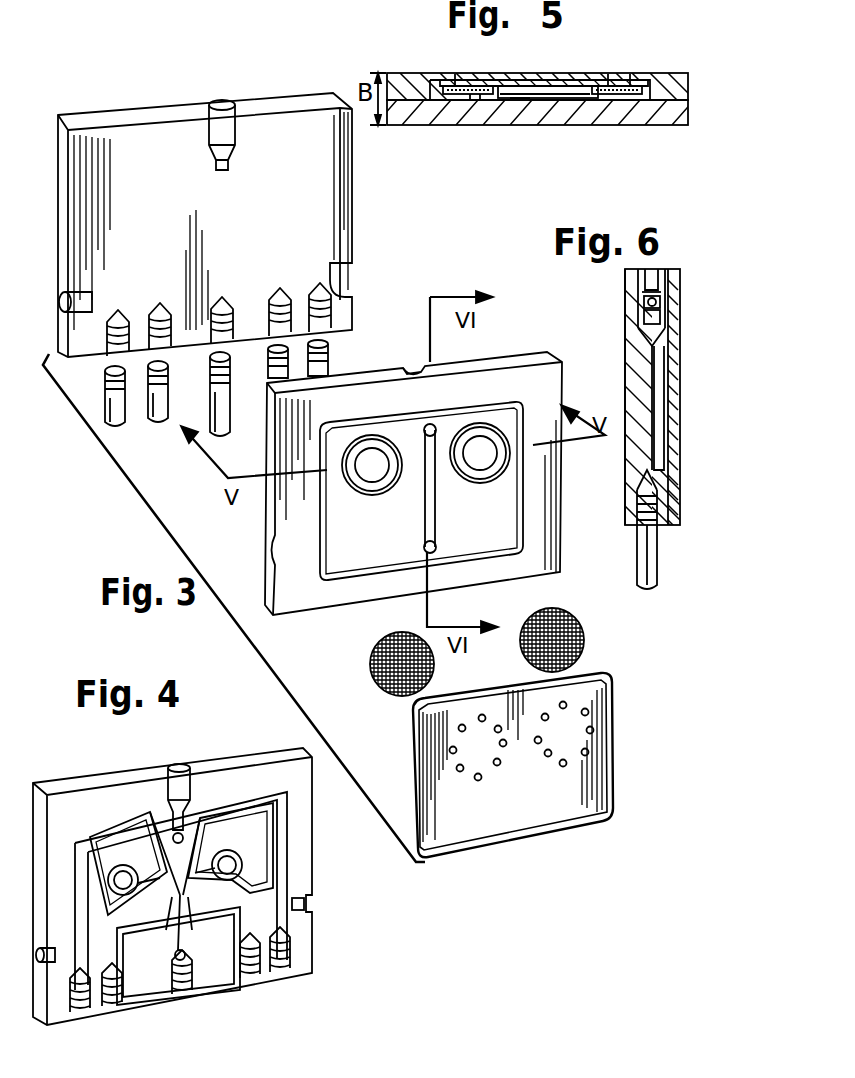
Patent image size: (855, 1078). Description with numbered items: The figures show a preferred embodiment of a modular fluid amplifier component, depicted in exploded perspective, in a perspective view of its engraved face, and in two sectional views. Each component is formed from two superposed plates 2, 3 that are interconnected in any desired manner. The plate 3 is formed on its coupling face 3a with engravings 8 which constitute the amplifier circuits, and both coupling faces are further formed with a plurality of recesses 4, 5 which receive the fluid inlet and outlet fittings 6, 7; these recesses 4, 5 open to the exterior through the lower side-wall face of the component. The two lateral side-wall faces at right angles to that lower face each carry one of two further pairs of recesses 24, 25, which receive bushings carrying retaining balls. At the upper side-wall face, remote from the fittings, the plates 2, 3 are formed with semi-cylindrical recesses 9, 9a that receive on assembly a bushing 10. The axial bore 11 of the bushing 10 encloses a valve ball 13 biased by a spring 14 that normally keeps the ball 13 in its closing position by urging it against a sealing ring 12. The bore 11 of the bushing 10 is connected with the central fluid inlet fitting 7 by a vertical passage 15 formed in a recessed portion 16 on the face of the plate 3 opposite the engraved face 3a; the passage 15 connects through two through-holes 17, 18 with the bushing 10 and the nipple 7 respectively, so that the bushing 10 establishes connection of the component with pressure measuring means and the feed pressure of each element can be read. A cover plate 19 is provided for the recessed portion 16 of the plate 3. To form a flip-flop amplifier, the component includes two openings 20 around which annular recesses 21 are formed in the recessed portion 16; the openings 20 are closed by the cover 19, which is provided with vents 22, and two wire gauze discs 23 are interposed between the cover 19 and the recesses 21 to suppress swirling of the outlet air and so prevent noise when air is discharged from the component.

In FIG. 3, the plate 2 is at (300, 103).
In FIG. 5, the plate 2 is at (452, 112).
In FIG. 6, the plate 2 is at (648, 440).
In FIG. 3, the plate 3 is at (520, 360).
In FIG. 4, the plate 3 is at (243, 760).
In FIG. 5, the plate 3 is at (402, 82).
In FIG. 6, the plate 3 is at (665, 530).
In FIG. 4, the coupling face 3a is at (292, 840).
In FIG. 3, the recesses 4 is at (107, 345).
In FIG. 4, the recesses 5 is at (85, 1012).
In FIG. 3, the fluid inlet and outlet fittings 6 is at (152, 420).
In FIG. 3, the central fluid inlet fitting 7 is at (230, 400).
In FIG. 6, the central fluid inlet fitting 7 is at (640, 553).
In FIG. 4, the engravings 8 is at (110, 840).
In FIG. 5, the engravings 8 is at (520, 100).
In FIG. 6, the engravings 8 is at (652, 420).
In FIG. 3, the semi-cylindrical recess 9 is at (220, 105).
In FIG. 4, the locating pin recess 9a is at (182, 765).
In FIG. 3, the bushing 10 is at (408, 368).
In FIG. 6, the bushing 10 is at (642, 284).
In FIG. 6, the axial bore 11 is at (655, 275).
In FIG. 6, the sealing ring 12 is at (645, 272).
In FIG. 6, the valve ball 13 is at (644, 302).
In FIG. 6, the spring 14 is at (644, 316).
In FIG. 3, the vertical passage 15 is at (432, 494).
In FIG. 5, the vertical passage 15 is at (560, 86).
In FIG. 6, the vertical passage 15 is at (655, 380).
In FIG. 3, the recessed portion 16 is at (352, 560).
In FIG. 3, the through-hole 17 is at (433, 425).
In FIG. 3, the through-hole 18 is at (437, 545).
In FIG. 3, the cover plate 19 is at (563, 818).
In FIG. 5, the cover plate 19 is at (522, 80).
In FIG. 3, the openings 20 is at (368, 470).
In FIG. 3, the annular recesses 21 is at (378, 440).
In FIG. 3, the vents 22 is at (560, 767).
In FIG. 5, the vents 22 is at (630, 80).
In FIG. 3, the wire gauze discs 23 is at (372, 670).
In FIG. 5, the wire gauze discs 23 is at (476, 100).
In FIG. 3, the recesses 24 is at (76, 292).
In FIG. 4, the recesses 25 is at (48, 948).